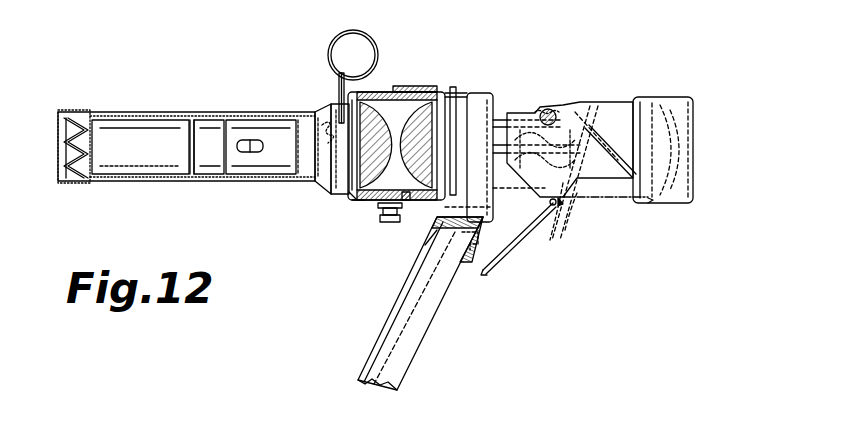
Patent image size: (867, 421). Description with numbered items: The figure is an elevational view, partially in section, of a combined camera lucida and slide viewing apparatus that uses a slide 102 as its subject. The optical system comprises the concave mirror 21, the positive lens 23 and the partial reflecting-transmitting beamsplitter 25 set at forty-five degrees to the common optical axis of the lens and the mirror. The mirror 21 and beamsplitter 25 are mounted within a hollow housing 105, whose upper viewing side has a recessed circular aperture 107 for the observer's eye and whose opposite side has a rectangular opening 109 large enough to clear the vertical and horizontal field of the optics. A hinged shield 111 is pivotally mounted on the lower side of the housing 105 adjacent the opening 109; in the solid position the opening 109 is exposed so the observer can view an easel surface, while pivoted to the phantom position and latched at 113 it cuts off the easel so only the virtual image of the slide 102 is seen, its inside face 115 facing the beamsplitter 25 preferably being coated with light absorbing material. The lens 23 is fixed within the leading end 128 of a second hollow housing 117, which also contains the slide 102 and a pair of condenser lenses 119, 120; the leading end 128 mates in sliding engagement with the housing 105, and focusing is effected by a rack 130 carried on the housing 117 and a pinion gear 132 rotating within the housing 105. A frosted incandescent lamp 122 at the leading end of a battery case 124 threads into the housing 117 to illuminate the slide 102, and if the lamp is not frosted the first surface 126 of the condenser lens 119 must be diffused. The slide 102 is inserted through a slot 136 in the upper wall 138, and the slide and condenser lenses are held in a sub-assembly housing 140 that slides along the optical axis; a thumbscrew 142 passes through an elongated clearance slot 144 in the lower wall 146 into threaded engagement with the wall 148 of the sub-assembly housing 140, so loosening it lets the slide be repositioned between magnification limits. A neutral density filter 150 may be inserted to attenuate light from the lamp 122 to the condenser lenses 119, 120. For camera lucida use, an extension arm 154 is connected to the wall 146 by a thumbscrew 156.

The neutral density filter 150 is at (374, 44).
The sub-assembly housing 140 is at (378, 92).
The condenser lens 120 is at (445, 88).
The slot 136 is at (456, 100).
The upper wall 138 is at (460, 104).
The slide 102 is at (480, 98).
The pinion gear 132 is at (590, 100).
The rack 130 is at (617, 88).
The recessed circular aperture 107 is at (655, 98).
The hollow housing 105 is at (693, 105).
The battery case 124 is at (126, 123).
The frosted incandescent lamp 122 is at (313, 104).
The first surface 126 is at (331, 187).
The condenser lens 119 is at (360, 200).
The lower wall 146 is at (362, 200).
The elongated clearance slot 144 is at (425, 203).
The thumbscrew 142 is at (382, 203).
The wall 148 is at (410, 203).
The second hollow housing 117 is at (428, 252).
The leading end 128 is at (512, 187).
The positive lens 23 is at (606, 150).
The concave mirror 21 is at (660, 160).
The partial reflecting-transmitting beamsplitter 25 is at (580, 195).
The rectangular opening 109 is at (562, 217).
The latch 113 is at (653, 200).
The hinged shield 111 is at (505, 258).
The inside face 115 is at (484, 271).
The thumbscrew 156 is at (452, 280).
The extension arm 154 is at (428, 338).